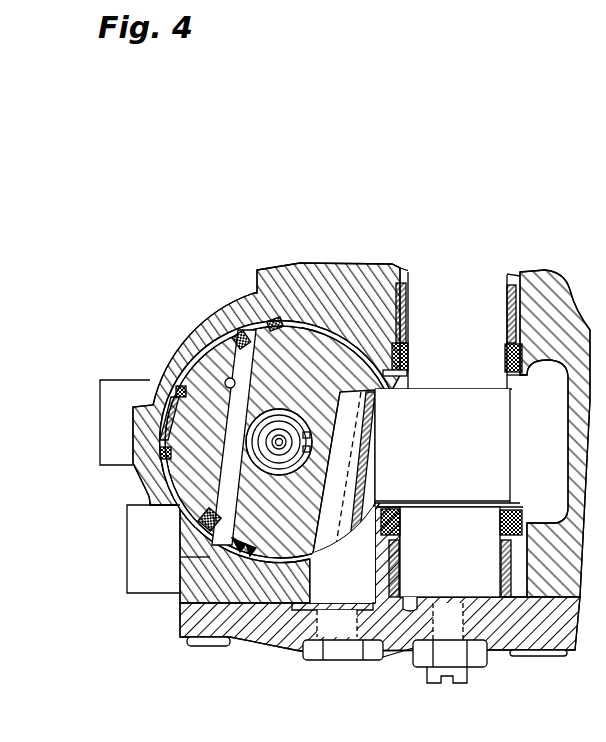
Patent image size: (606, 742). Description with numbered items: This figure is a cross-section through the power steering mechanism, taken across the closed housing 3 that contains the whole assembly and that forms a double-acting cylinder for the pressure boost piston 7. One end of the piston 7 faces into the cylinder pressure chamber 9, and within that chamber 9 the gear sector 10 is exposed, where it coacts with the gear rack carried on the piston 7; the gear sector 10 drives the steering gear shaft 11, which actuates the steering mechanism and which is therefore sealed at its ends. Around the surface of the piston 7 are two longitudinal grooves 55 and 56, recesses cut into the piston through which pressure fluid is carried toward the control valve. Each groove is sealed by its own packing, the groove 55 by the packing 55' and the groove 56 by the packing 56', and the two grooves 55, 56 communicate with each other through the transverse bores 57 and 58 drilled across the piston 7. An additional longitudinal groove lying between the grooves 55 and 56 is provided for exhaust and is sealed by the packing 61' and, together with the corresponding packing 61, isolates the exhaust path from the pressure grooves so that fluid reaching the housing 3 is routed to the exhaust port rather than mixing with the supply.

The housing 3 is at (290, 300).
The pressure boost piston 7 is at (208, 354).
The cylinder pressure chamber 9 is at (350, 385).
The gear sector 10 is at (399, 300).
The steering gear shaft 11 is at (446, 298).
The longitudinal groove 55 is at (133, 525).
The packing 55' is at (138, 562).
The longitudinal groove 56 is at (151, 271).
The packing 56' is at (135, 302).
The transverse bore 57 is at (232, 500).
The transverse bore 58 is at (230, 405).
The bearing ring 61 is at (103, 398).
The packing 61' is at (95, 429).